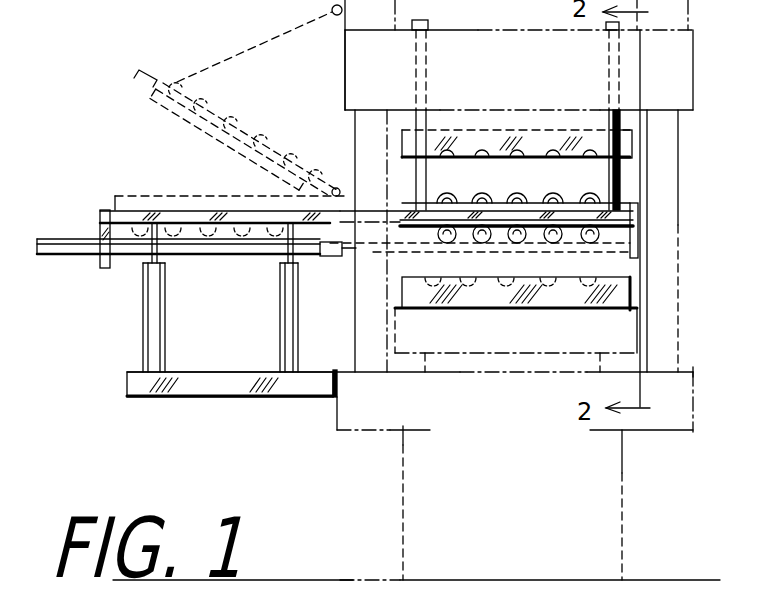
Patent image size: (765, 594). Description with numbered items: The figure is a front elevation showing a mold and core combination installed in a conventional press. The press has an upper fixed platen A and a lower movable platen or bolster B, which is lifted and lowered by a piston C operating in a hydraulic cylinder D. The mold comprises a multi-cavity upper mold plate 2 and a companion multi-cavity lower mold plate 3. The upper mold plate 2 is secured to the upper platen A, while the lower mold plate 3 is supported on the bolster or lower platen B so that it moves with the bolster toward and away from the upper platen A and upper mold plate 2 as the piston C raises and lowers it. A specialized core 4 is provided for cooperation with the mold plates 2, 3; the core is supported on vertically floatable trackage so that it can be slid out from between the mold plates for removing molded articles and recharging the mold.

The upper fixed platen A is at (683, 93).
The upper mold plate 2 is at (632, 153).
The core 4 is at (625, 198).
The lower mold plate 3 is at (633, 290).
The lower movable platen B is at (628, 331).
The piston C is at (548, 372).
The hydraulic cylinder D is at (622, 469).